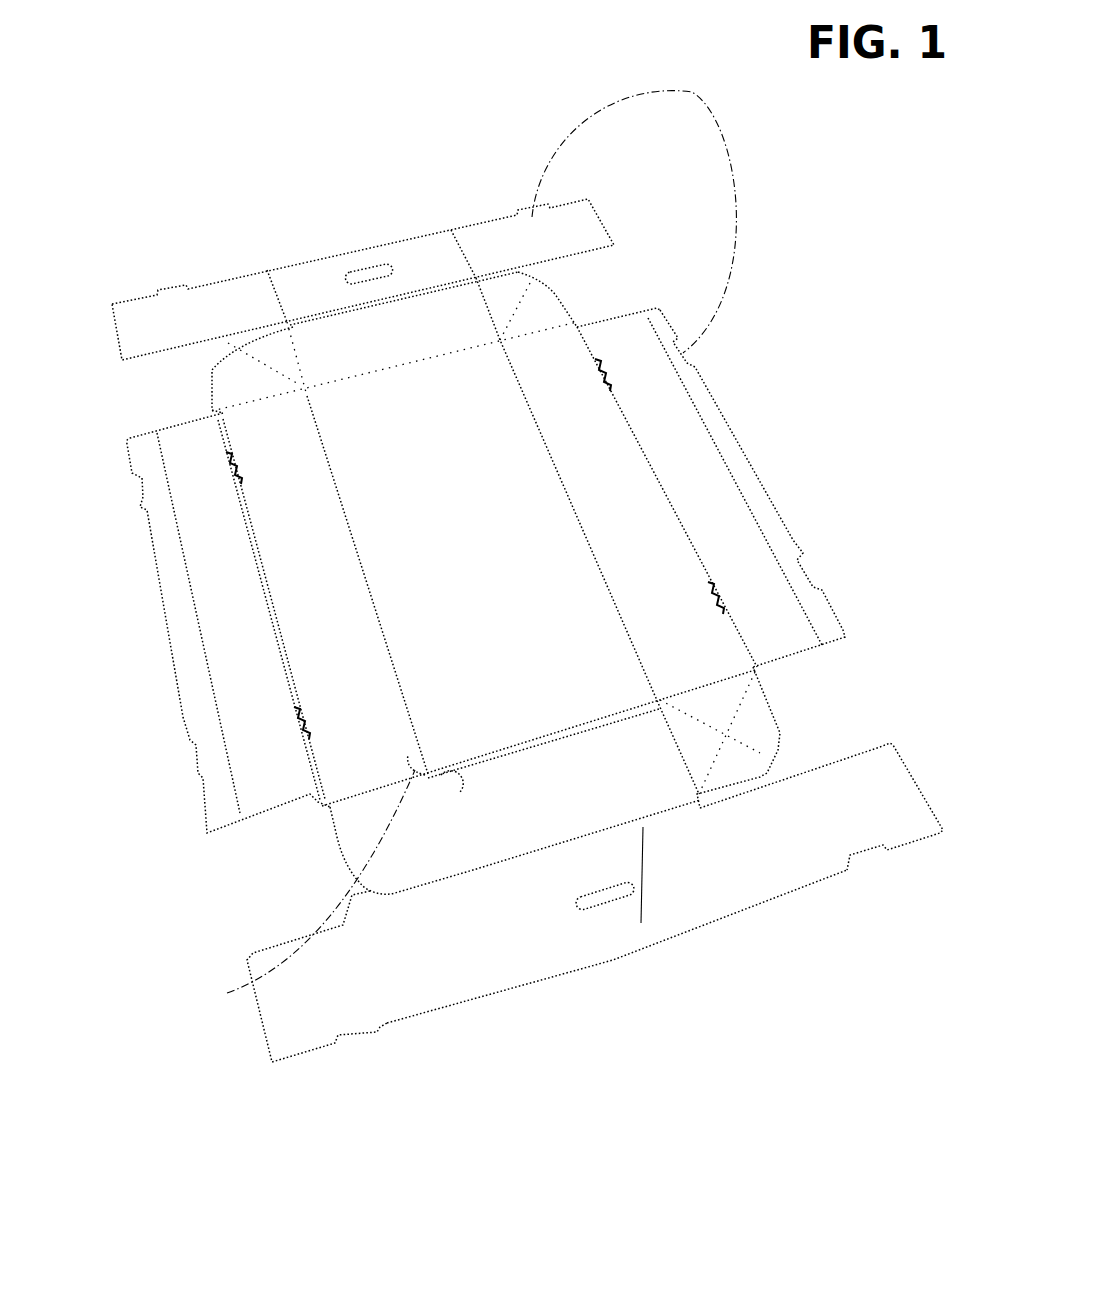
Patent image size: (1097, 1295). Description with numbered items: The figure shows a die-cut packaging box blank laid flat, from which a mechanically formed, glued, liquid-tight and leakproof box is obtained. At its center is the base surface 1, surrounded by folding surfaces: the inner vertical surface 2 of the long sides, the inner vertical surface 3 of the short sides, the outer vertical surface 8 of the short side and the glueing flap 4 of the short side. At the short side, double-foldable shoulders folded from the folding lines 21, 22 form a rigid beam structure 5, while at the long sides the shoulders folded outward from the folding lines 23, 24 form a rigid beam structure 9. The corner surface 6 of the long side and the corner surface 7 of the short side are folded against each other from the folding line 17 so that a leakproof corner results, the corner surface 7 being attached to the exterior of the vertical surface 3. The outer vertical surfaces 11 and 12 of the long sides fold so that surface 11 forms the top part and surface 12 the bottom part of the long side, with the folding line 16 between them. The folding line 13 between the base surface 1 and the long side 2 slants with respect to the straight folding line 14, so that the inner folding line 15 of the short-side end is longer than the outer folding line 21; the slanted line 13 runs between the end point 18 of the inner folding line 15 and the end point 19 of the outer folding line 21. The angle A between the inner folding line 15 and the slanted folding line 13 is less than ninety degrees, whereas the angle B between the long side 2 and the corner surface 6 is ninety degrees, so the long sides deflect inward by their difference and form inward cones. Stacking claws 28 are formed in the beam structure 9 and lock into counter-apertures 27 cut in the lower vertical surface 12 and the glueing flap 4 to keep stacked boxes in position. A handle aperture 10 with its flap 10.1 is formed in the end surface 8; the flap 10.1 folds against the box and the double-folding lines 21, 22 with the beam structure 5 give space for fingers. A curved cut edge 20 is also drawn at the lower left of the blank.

The base surface 1 is at (470, 574).
The inner vertical surface of the long sides 2 is at (623, 533).
The inner vertical surface of the short sides 3 is at (553, 787).
The glueing flap of the short side 4 is at (838, 823).
The rigid beam structure 5 is at (667, 817).
The corner surface of the long side 6 is at (377, 830).
The corner surface of the short side 7 is at (420, 857).
The outer vertical surface of the short side 8 is at (641, 923).
The rigid beam structure 9 is at (260, 587).
The handle aperture 10 is at (358, 270).
The flap 10.1 is at (373, 266).
The outer vertical surface of the long side 11 is at (733, 557).
The outer vertical surface of the long side 12 is at (777, 545).
The folding line 13 is at (450, 820).
The folding line 14 is at (372, 596).
The inner folding line 15 is at (583, 727).
The folding line 16 is at (730, 483).
The folding line 17 is at (427, 773).
The end point 18 is at (430, 777).
The end point 19 is at (440, 773).
The curved flap 20 is at (295, 916).
The folding line 21 is at (593, 800).
The folding line 22 is at (640, 813).
The folding line 23 is at (250, 522).
The folding line 24 is at (247, 545).
The counter-aperture 27 is at (634, 197).
The stacking claw 28 is at (600, 380).
The angle A is at (467, 787).
The angle B is at (398, 749).